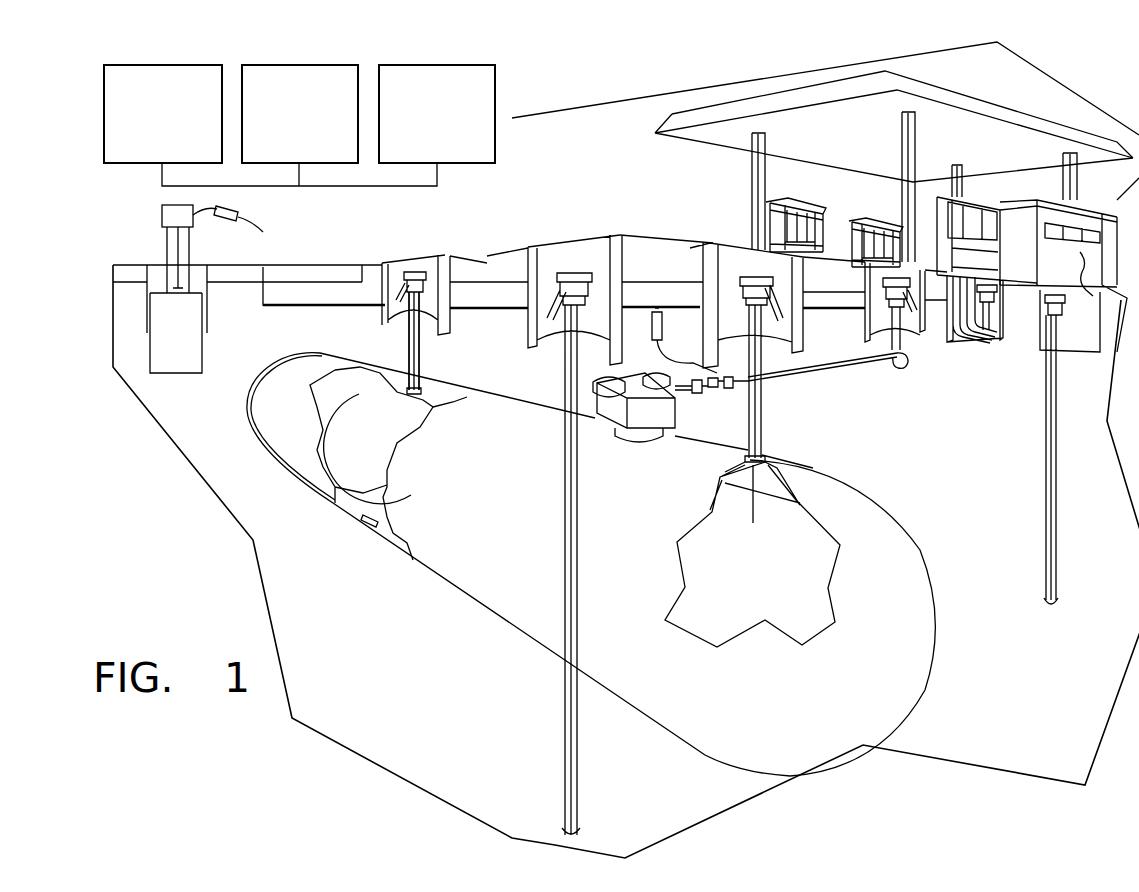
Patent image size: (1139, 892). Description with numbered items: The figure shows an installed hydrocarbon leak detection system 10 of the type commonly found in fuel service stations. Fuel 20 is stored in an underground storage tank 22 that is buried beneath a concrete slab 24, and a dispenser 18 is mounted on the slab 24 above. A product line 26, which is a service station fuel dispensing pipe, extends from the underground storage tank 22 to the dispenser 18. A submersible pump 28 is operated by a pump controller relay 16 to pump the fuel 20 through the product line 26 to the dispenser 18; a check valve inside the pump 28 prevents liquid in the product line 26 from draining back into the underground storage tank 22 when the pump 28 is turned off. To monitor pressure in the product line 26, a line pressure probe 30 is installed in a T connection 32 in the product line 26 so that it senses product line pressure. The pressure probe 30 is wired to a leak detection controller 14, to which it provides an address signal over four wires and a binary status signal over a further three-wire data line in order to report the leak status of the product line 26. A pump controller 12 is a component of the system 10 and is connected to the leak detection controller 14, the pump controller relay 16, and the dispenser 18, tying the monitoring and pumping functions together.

The hydrocarbon leak detection system 10 is at (600, 88).
The pump controller 12 is at (457, 63).
The leak detection controller 14 is at (183, 63).
The pump controller relay 16 is at (320, 63).
The dispenser 18 is at (945, 215).
The fuel 20 is at (746, 611).
The underground storage tank 22 is at (905, 580).
The concrete slab 24 is at (123, 275).
The product line 26 is at (833, 365).
The submersible pump 28 is at (657, 412).
The line pressure probe 30 is at (713, 390).
The T connection 32 is at (733, 383).